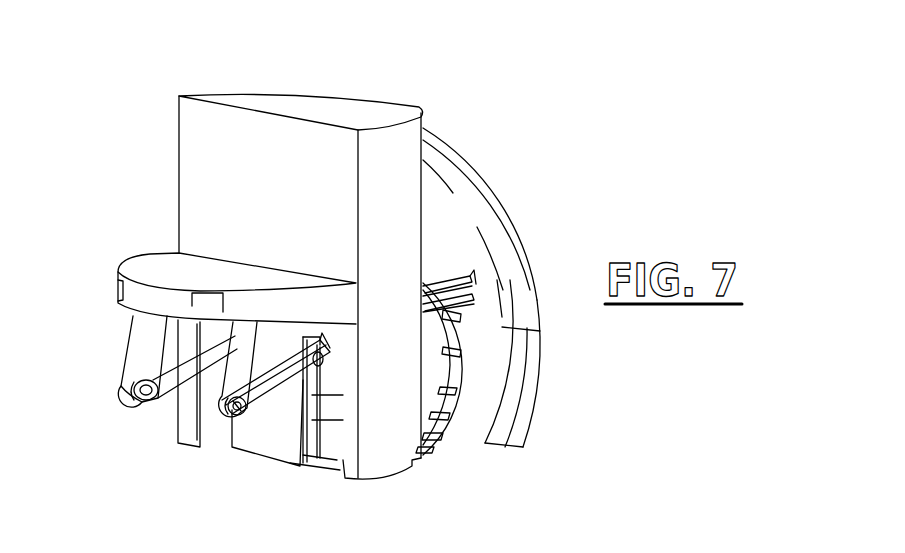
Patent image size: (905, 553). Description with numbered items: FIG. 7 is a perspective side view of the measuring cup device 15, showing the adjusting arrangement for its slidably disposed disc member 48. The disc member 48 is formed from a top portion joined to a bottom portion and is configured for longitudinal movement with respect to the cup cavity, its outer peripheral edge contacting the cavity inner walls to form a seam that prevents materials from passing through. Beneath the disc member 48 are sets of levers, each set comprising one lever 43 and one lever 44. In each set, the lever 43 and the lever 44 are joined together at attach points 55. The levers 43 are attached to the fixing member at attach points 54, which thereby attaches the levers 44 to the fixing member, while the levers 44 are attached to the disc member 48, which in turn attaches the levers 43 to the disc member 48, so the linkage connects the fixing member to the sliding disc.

The adjustment assembly 15 is at (478, 107).
The disc member 48 is at (178, 270).
The lever 44 is at (142, 348).
The attach points 55 is at (225, 418).
The lever 43 is at (283, 378).
The attach points 54 is at (322, 365).